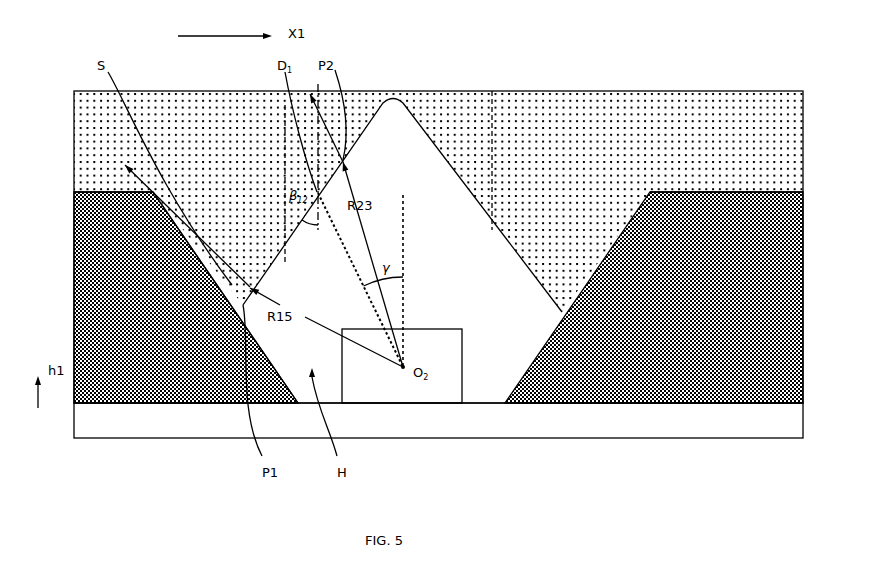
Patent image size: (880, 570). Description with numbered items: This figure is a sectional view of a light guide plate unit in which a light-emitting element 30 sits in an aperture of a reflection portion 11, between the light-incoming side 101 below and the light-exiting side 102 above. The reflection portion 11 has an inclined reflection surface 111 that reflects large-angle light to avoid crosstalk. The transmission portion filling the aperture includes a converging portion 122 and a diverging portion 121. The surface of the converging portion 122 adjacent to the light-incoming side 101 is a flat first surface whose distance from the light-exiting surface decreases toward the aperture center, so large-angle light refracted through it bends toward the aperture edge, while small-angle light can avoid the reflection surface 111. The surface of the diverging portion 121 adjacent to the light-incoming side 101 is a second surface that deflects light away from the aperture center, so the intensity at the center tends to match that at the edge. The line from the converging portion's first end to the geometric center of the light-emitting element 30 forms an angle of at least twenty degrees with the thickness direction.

The light-exiting side 102 is at (678, 63).
The reflection portion 11 is at (177, 393).
The light-incoming side 101 is at (690, 452).
The diverging portion 121 is at (363, 110).
The converging portion 122 is at (250, 262).
The reflection surface 111 is at (243, 320).
The light-emitting element 30 is at (423, 387).